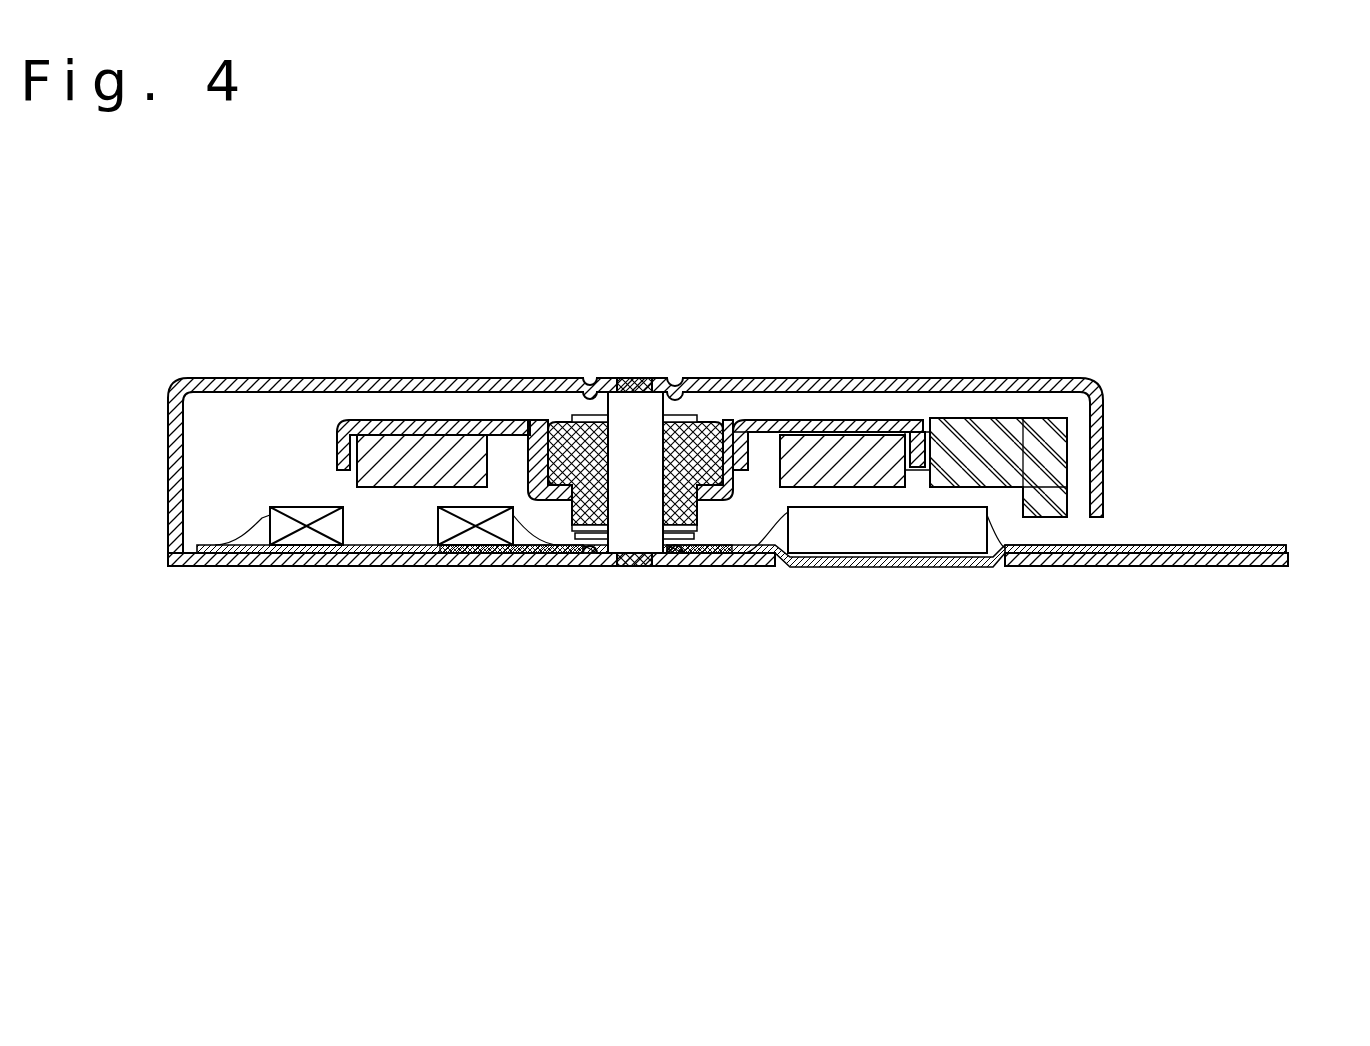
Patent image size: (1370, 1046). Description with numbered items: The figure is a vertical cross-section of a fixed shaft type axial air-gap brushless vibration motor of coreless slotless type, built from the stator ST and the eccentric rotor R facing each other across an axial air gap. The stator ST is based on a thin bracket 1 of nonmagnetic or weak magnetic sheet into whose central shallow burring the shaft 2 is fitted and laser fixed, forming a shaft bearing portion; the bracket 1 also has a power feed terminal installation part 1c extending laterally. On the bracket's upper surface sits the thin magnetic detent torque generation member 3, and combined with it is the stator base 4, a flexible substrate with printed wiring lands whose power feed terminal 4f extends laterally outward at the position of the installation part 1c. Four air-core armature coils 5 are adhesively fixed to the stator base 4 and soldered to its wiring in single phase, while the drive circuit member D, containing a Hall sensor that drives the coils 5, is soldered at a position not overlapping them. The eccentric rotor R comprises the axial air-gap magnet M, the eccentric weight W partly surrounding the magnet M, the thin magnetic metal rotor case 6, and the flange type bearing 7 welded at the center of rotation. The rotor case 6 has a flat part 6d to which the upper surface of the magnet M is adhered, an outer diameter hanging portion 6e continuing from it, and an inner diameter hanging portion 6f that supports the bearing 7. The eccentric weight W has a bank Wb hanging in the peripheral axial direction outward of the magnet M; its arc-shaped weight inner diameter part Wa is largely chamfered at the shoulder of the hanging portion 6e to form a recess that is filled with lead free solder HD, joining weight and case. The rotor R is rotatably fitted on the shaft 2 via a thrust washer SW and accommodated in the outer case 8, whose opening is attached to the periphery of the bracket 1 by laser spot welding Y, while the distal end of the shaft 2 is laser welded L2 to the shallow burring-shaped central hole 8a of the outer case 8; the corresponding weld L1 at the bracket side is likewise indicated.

The bracket 1 is at (400, 566).
The power feed terminal installation part 1c is at (1192, 567).
The shaft 2 is at (650, 475).
The detent torque generation member 3 is at (552, 549).
The stator base 4 is at (242, 537).
The power feed terminal 4f is at (1240, 547).
The air-core armature coil 5 is at (473, 537).
The rotor case 6 is at (462, 415).
The flat part 6d is at (865, 425).
The outer diameter hanging portion 6e is at (925, 455).
The hanging portion on the inner diameter side 6f is at (763, 440).
The flange type bearing 7 is at (558, 422).
The outer case 8 is at (357, 378).
The shallow burring-shaped central hole 8a is at (617, 380).
The lead free solder HD is at (928, 428).
The eccentric weight W is at (1040, 447).
The weight inner diameter part Wa is at (935, 440).
The bank Wb is at (1045, 505).
The eccentric rotor R is at (1033, 402).
The axial air-gap magnet M is at (843, 470).
The drive circuit member D is at (933, 527).
The stator ST is at (787, 598).
The thrust washer SW is at (590, 555).
The lower bearing L1 is at (640, 566).
The laser weld L2 is at (640, 378).
The laser spot welding Y is at (166, 550).